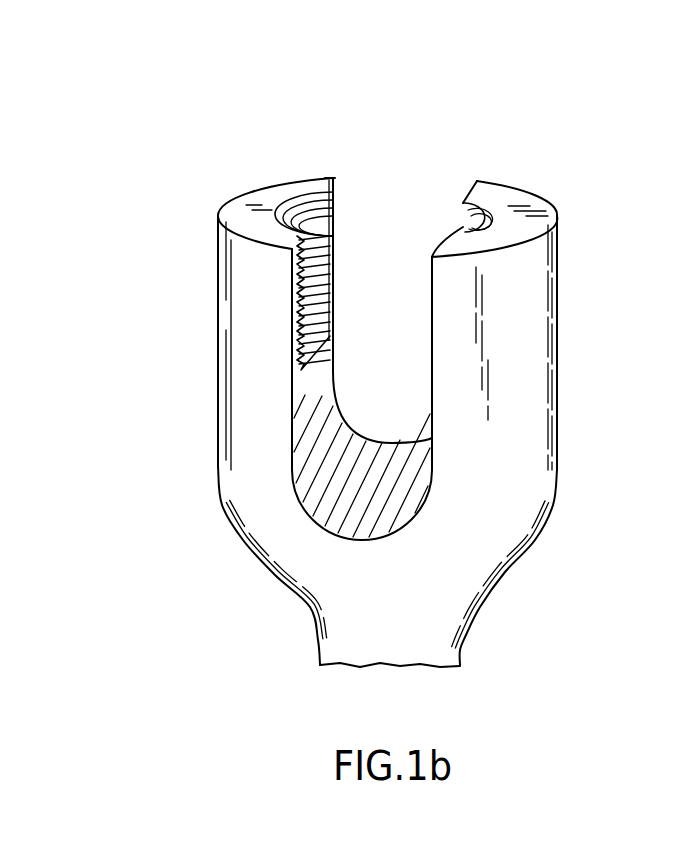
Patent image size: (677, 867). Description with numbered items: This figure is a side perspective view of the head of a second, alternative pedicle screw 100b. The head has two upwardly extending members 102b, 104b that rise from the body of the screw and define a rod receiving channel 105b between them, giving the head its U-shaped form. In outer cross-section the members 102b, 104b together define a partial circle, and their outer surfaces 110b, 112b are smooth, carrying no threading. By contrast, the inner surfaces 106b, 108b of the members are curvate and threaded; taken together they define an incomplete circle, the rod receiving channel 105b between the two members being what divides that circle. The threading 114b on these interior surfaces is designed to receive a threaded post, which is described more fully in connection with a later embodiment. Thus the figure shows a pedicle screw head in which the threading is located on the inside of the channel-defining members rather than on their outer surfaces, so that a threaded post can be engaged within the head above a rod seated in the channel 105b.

The pedicle screw 100b is at (212, 193).
The upwardly extending member 102b is at (261, 177).
The upwardly extending member 104b is at (505, 170).
The rod receiving channel 105b is at (405, 407).
The inner surface 106b is at (338, 185).
The inner surface 108b is at (463, 214).
The outer surface 110b is at (258, 329).
The outer surface 112b is at (516, 323).
The threading 114b is at (468, 212).